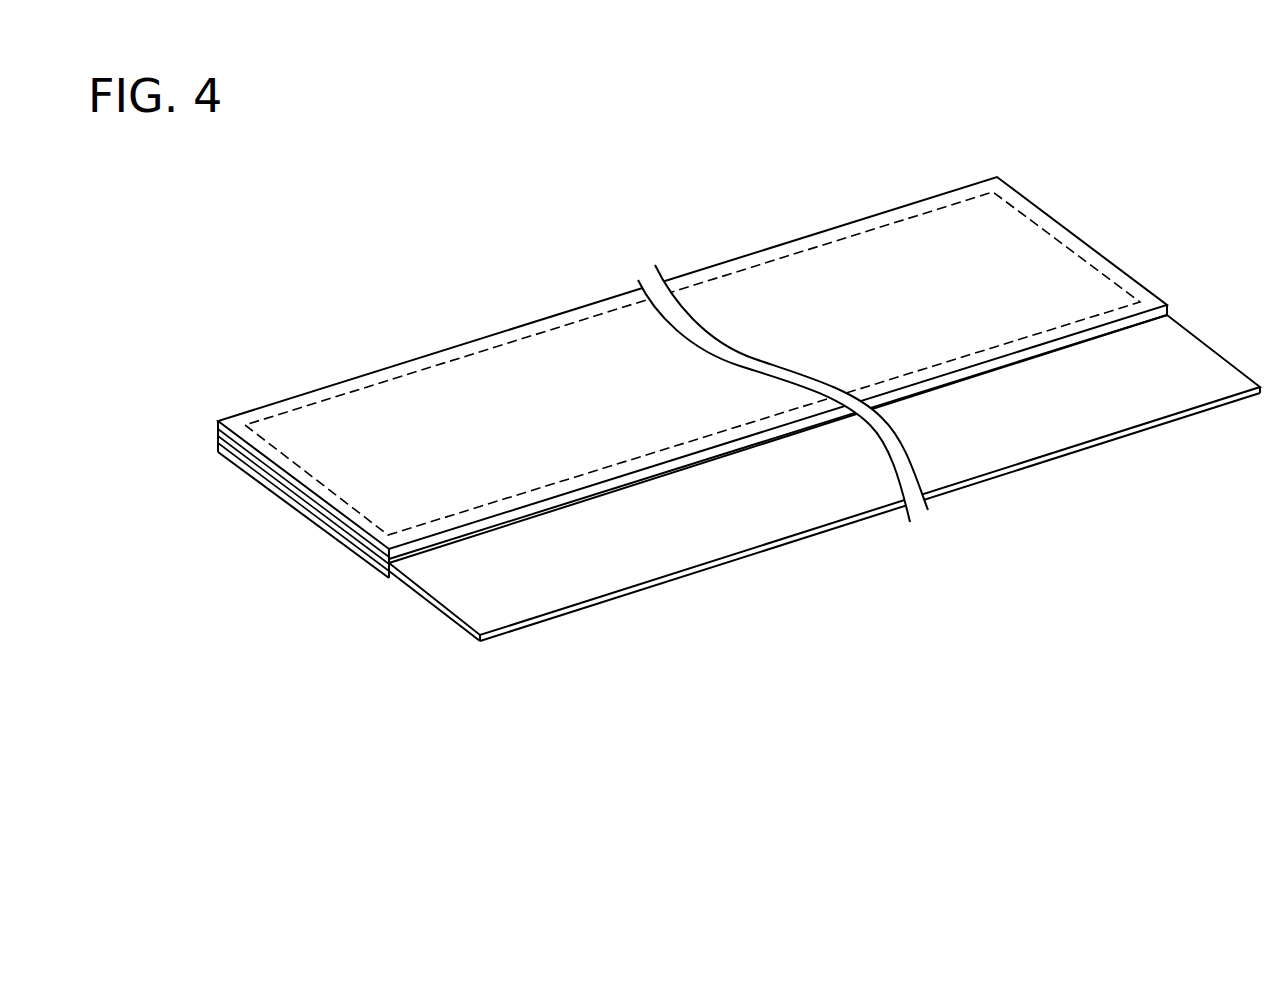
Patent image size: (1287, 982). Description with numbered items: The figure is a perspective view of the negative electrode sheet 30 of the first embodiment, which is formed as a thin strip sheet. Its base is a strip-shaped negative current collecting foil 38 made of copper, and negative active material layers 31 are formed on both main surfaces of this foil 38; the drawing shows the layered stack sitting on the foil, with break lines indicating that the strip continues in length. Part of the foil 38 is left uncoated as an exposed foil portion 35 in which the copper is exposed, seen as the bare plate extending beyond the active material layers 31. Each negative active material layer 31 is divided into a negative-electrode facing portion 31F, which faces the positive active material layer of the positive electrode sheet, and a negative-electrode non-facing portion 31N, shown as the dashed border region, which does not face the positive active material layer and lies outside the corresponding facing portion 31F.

The negative electrode sheet 30 is at (717, 394).
The negative active material layer 31 is at (684, 348).
The negative-electrode non-facing portion 31N is at (827, 238).
The negative-electrode facing portion 31F is at (920, 263).
The exposed foil portion 35 is at (587, 563).
The negative current collecting foil 38 is at (801, 491).